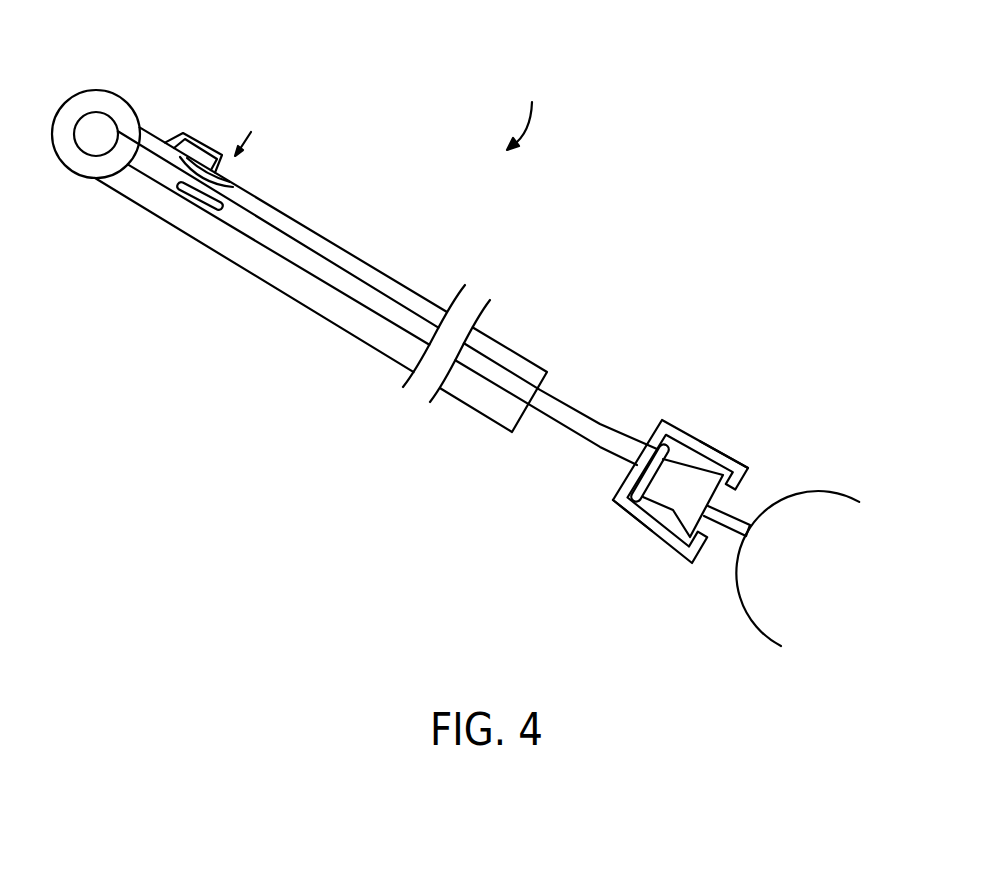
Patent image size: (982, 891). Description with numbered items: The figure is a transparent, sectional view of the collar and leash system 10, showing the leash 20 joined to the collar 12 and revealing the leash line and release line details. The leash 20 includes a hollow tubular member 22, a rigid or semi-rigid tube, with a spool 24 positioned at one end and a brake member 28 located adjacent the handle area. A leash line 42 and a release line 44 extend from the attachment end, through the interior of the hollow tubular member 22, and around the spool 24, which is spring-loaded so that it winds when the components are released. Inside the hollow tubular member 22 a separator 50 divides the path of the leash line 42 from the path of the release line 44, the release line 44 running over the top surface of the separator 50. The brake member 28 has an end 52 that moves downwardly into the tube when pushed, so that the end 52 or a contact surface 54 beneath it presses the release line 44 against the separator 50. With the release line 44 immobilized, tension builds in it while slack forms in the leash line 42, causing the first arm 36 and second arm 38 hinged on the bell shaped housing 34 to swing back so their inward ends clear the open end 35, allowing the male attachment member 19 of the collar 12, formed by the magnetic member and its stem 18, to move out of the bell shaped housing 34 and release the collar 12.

The collar and leash system 10 is at (525, 115).
The collar 12 is at (840, 496).
The stem 18 is at (751, 523).
The male attachment member 19 is at (658, 537).
The leash 20 is at (327, 238).
The hollow tubular member 22 is at (290, 217).
The spool 24 is at (91, 91).
The brake member 28 is at (203, 142).
The bell shaped housing 34 is at (678, 465).
The open end 35 is at (705, 522).
The first arm 36 is at (637, 519).
The second arm 38 is at (728, 452).
The leash line 42 is at (302, 272).
The release line 44 is at (368, 283).
The separator 50 is at (203, 202).
The end 52 is at (228, 163).
The contact surface 54 is at (236, 186).